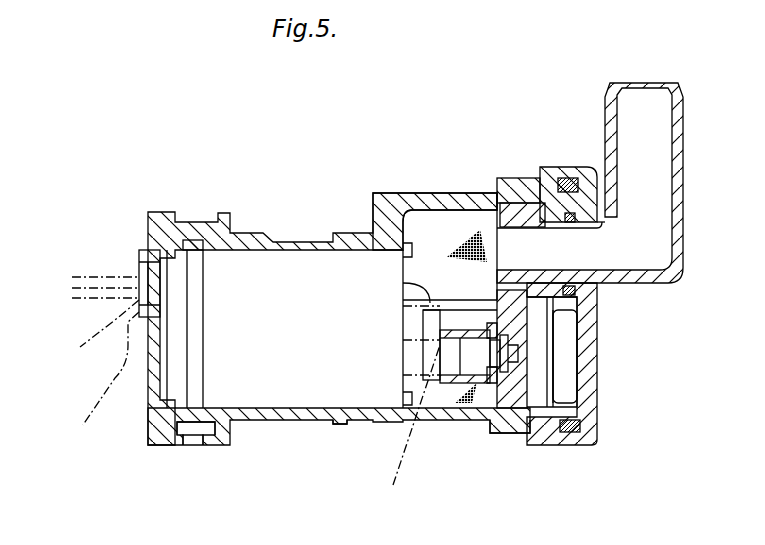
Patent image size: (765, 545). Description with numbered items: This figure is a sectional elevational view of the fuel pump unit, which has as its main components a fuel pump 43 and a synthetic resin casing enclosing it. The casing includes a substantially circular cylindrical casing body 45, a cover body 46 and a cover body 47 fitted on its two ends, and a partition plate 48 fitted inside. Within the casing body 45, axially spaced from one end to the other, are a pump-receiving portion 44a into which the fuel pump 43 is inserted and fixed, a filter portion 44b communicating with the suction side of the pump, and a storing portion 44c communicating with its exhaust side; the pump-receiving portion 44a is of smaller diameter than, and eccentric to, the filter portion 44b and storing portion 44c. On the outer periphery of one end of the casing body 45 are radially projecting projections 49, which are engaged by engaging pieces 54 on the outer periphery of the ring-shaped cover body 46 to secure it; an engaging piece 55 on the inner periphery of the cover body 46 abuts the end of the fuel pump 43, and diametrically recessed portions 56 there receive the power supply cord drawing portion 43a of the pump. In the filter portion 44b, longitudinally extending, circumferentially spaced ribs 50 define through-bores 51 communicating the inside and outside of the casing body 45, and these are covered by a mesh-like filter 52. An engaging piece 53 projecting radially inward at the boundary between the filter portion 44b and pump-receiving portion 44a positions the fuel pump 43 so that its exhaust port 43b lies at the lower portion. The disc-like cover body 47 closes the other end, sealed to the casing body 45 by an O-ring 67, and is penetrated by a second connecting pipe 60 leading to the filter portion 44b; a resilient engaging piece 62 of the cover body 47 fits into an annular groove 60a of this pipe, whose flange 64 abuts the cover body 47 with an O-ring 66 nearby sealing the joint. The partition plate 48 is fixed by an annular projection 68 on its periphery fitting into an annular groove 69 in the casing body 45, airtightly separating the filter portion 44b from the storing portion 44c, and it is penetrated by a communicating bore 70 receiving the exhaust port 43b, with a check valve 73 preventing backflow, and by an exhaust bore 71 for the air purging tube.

The fuel pump 43 is at (103, 380).
The power supply cord drawing portion 43a is at (97, 329).
The exhaust port 43b is at (408, 430).
The pump-receiving portion 44a is at (300, 380).
The filter portion 44b is at (418, 232).
The storing portion 44c is at (562, 372).
The casing body 45 is at (356, 424).
The cover body 46 is at (152, 423).
The cover body 47 is at (600, 402).
The partition plate 48 is at (518, 438).
The projections 49 is at (183, 447).
The ribs 50 is at (423, 196).
The through-bores 51 is at (403, 289).
The filter 52 is at (458, 228).
The engaging piece 53 is at (403, 255).
The engaging pieces 54 is at (210, 447).
The engaging piece 55 is at (162, 363).
The recessed portions 56 is at (142, 277).
The second connecting pipe 60 is at (683, 165).
The annular groove 60a is at (560, 228).
The engaging piece 62 is at (540, 212).
The flange 64 is at (583, 318).
The O-ring 66 is at (576, 290).
The O-ring 67 is at (570, 178).
The annular projection 68 is at (548, 175).
The annular groove 69 is at (522, 200).
The communicating bore 70 is at (440, 352).
The exhaust bore 71 is at (490, 256).
The check valve 73 is at (512, 360).